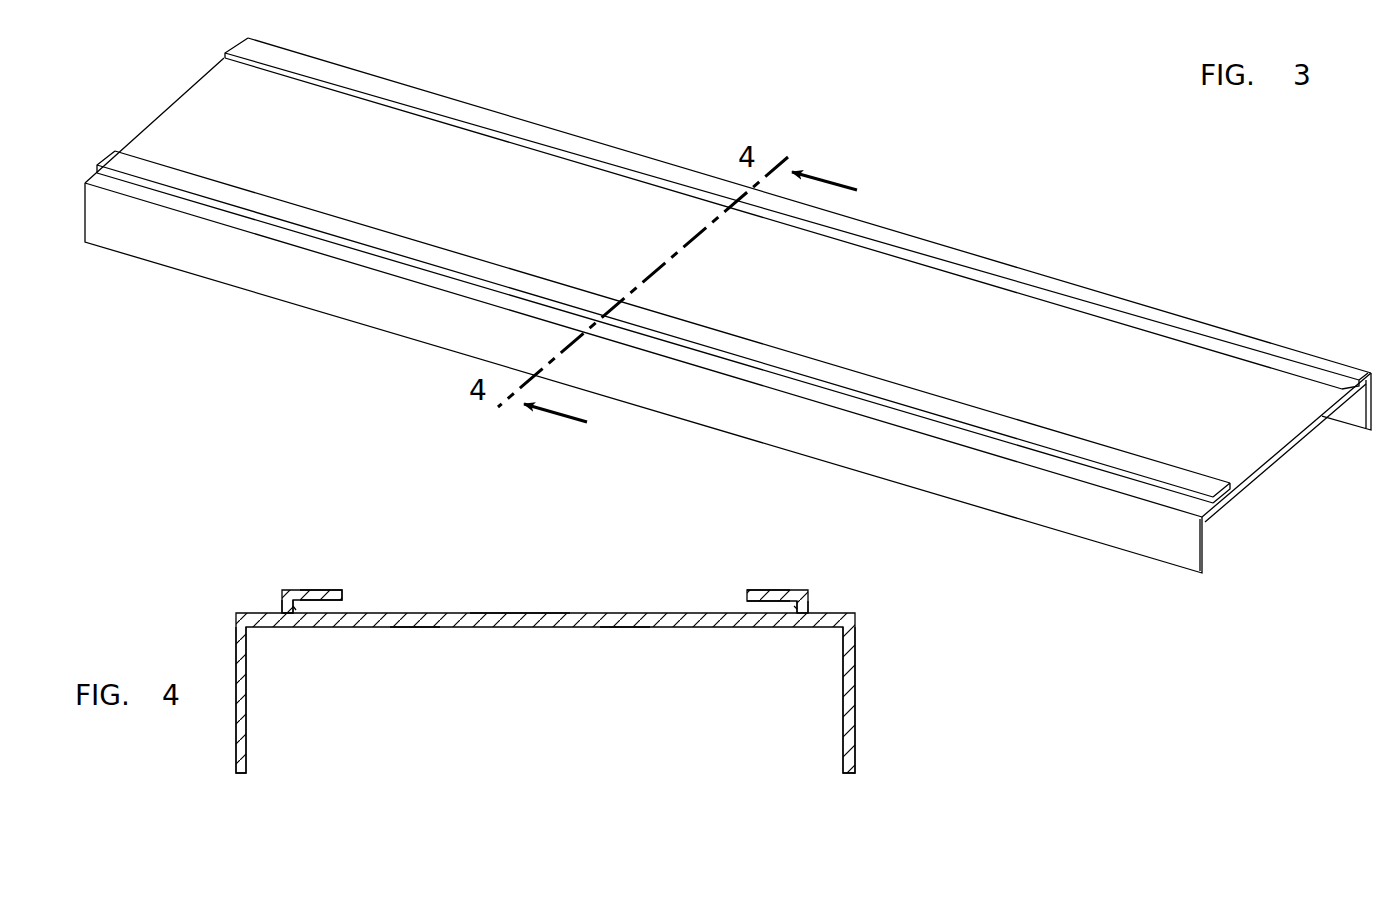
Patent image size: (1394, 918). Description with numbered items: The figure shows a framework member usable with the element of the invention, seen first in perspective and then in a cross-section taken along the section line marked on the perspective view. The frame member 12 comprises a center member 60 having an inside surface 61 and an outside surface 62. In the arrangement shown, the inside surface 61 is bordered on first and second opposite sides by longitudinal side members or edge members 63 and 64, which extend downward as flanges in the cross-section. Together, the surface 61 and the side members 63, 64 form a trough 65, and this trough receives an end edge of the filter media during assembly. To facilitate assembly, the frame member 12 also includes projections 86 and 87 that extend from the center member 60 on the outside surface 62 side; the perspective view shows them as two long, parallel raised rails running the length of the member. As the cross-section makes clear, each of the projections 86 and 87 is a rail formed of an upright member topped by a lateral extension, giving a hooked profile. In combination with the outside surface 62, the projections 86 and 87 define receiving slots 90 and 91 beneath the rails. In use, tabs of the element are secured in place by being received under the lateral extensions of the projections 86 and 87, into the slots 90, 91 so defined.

In FIG. 3, the frame member 12 is at (995, 313).
In FIG. 4, the frame member 12 is at (540, 612).
In FIG. 3, the center member 60 is at (857, 273).
In FIG. 4, the center member 60 is at (493, 612).
In FIG. 3, the inside surface 61 is at (1272, 455).
In FIG. 4, the inside surface 61 is at (622, 627).
In FIG. 3, the outside surface 62 is at (1106, 366).
In FIG. 4, the outside surface 62 is at (590, 613).
In FIG. 4, the side member 63 is at (247, 747).
In FIG. 4, the side member 64 is at (840, 737).
In FIG. 4, the trough 65 is at (412, 627).
In FIG. 4, the projection 86 is at (298, 590).
In FIG. 4, the projection 87 is at (788, 590).
In FIG. 4, the receiving slot 90 is at (297, 606).
In FIG. 4, the receiving slot 91 is at (790, 608).